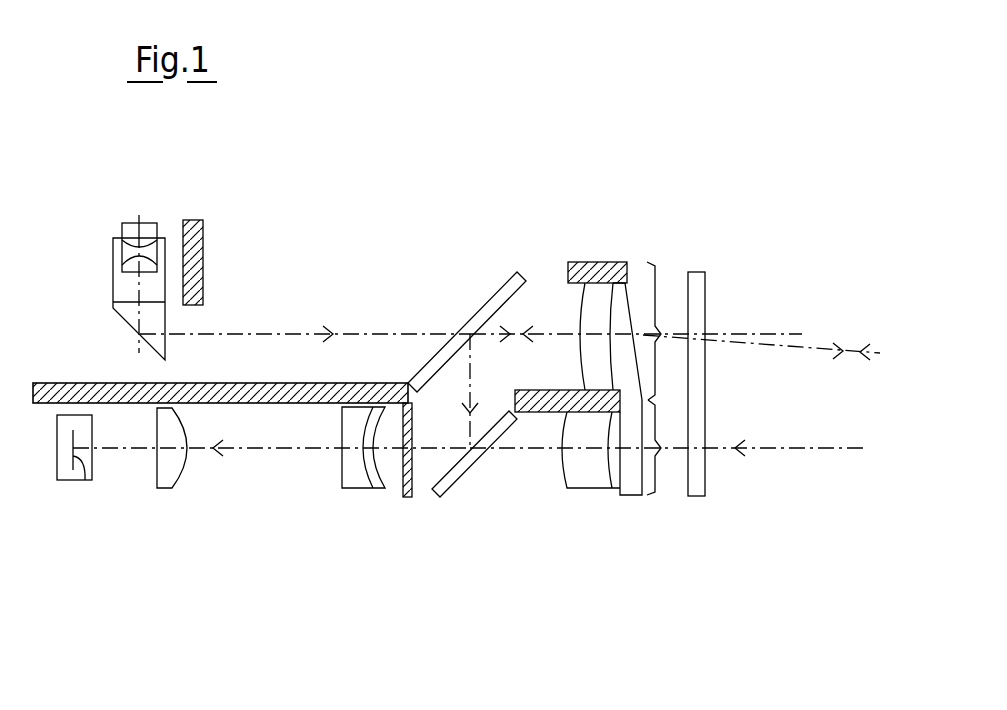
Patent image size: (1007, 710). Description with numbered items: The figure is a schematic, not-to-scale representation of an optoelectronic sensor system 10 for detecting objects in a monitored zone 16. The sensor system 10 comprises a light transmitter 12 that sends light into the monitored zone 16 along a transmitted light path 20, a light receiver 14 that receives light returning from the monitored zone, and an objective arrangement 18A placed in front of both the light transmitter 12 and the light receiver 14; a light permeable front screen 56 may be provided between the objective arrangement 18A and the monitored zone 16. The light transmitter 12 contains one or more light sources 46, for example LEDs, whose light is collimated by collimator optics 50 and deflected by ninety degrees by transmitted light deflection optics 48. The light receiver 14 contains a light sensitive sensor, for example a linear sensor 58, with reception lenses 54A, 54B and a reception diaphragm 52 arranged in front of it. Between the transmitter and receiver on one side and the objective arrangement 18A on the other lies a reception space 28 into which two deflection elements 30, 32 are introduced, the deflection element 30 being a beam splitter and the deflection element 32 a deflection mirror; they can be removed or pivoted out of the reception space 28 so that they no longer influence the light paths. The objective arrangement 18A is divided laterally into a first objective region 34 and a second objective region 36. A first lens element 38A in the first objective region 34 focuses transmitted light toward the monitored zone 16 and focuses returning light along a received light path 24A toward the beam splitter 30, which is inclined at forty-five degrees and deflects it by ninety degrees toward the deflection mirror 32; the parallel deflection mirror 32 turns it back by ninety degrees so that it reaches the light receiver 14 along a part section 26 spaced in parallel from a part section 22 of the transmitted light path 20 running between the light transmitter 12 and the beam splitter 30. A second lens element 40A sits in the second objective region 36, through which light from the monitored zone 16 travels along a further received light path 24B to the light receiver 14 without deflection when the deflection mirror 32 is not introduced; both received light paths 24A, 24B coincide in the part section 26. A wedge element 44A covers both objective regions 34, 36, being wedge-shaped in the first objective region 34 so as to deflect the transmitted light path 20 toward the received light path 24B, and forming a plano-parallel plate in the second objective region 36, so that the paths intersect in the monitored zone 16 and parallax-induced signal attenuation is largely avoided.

The optoelectronic sensor system 10 is at (378, 163).
The light transmitter 12 is at (120, 256).
The light receiver 14 is at (56, 485).
The monitored zone 16 is at (855, 259).
The objective arrangement 18A is at (578, 363).
The transmitted light path 20 is at (510, 327).
The part section of the transmitted light path 22 is at (370, 330).
The received light path 24A is at (490, 232).
The further received light path 24B is at (795, 450).
The part section of the received light path 26 is at (248, 448).
The reception space 28 is at (477, 504).
The beam splitter 30 is at (483, 315).
The deflection mirror 32 is at (463, 462).
The first objective region 34 is at (657, 330).
The second objective region 36 is at (657, 468).
The first lens element 38A is at (578, 318).
The second lens element 40A is at (585, 477).
The wedge element 44A is at (633, 497).
The light source 46 is at (112, 220).
The transmitted light deflection optics 48 is at (128, 310).
The collimator optics 50 is at (130, 262).
The reception diaphragm 52 is at (405, 497).
The reception lens 54A is at (350, 478).
The reception lens 54B is at (167, 475).
The front screen 56 is at (697, 420).
The linear sensor 58 is at (83, 468).